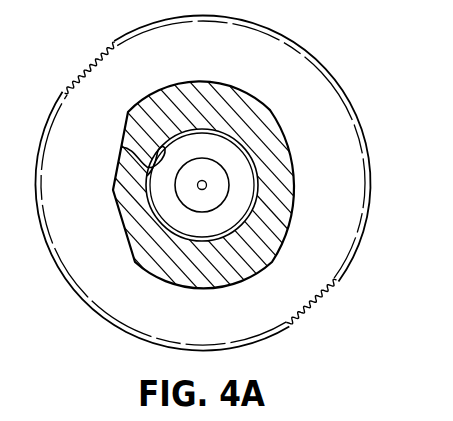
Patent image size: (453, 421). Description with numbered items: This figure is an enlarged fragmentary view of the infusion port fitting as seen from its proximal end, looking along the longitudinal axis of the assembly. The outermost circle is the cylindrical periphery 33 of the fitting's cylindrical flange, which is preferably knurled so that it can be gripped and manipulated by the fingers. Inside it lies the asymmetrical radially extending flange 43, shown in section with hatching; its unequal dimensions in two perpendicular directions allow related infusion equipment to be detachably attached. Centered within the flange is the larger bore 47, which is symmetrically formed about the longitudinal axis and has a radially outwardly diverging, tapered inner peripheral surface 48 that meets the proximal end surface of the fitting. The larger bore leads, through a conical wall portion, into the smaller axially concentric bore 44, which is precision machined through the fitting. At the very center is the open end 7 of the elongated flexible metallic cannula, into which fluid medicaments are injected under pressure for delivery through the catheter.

The cylindrical periphery 33 is at (83, 63).
The asymmetrical radially extending flange 43 is at (264, 128).
The axially concentric bore 44 is at (208, 186).
The larger bore 47 is at (233, 211).
The tapered inner peripheral surface 48 is at (122, 147).
The open end 7 is at (197, 188).